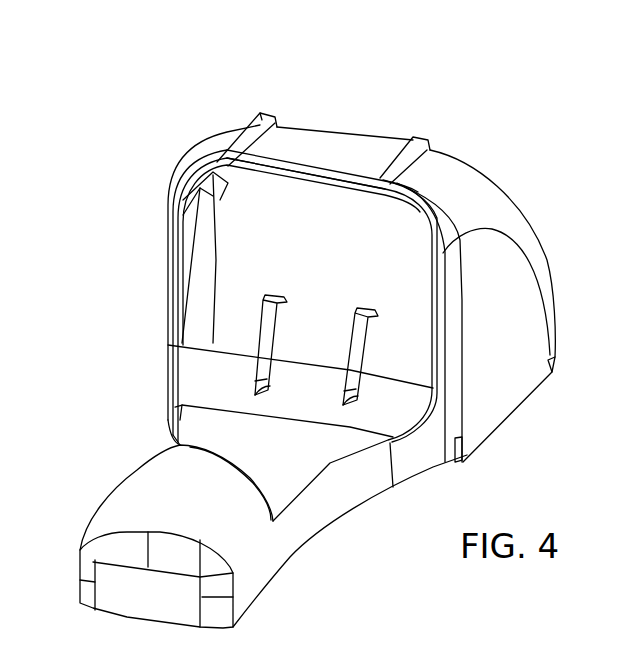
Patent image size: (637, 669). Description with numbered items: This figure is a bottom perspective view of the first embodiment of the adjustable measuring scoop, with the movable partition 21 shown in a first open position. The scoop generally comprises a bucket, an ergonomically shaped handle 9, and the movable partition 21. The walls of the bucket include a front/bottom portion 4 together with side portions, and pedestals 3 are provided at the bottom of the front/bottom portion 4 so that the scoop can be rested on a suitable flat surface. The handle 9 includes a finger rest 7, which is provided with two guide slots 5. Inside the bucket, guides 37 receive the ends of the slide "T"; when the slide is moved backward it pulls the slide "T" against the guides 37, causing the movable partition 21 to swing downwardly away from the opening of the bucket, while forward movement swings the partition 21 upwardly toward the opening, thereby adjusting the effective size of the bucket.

The pedestals 3 is at (268, 113).
The front/bottom portion 4 is at (322, 147).
The guide slots 5 is at (358, 404).
The finger rest 7 is at (195, 378).
The handle 9 is at (293, 515).
The movable partition 21 is at (258, 238).
The guides 37 is at (265, 325).